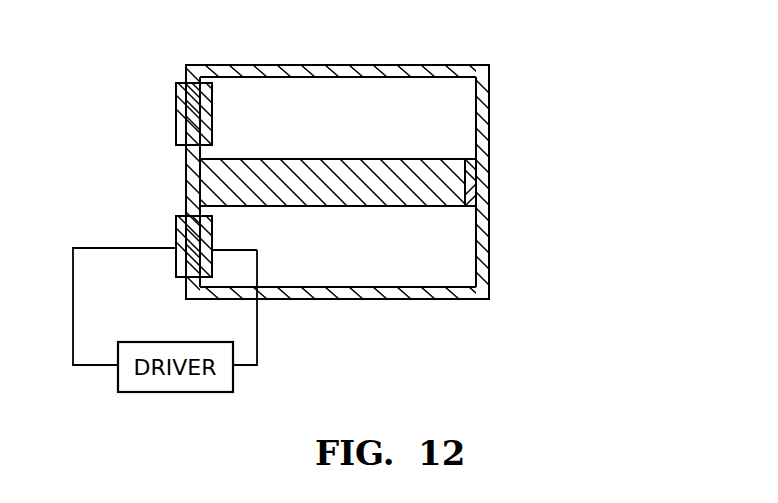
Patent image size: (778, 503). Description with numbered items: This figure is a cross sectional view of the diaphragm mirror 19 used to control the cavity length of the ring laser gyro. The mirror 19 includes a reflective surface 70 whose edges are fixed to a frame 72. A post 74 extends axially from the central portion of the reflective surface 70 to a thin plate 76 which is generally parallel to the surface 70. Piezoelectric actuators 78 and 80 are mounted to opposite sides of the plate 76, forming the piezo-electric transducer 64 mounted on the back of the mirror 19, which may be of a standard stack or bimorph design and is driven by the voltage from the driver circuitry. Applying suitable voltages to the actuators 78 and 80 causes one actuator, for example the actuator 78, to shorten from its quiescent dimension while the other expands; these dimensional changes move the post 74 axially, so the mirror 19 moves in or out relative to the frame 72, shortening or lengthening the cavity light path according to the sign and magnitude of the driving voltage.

The diaphragm mirror 19 is at (539, 164).
The piezo-electric transducer 64 is at (553, 322).
The reflective surface 70 is at (489, 184).
The frame 72 is at (476, 65).
The post 74 is at (432, 207).
The thin plate 76 is at (187, 178).
The piezoelectric actuator 78 is at (212, 228).
The piezoelectric actuator 80 is at (175, 238).